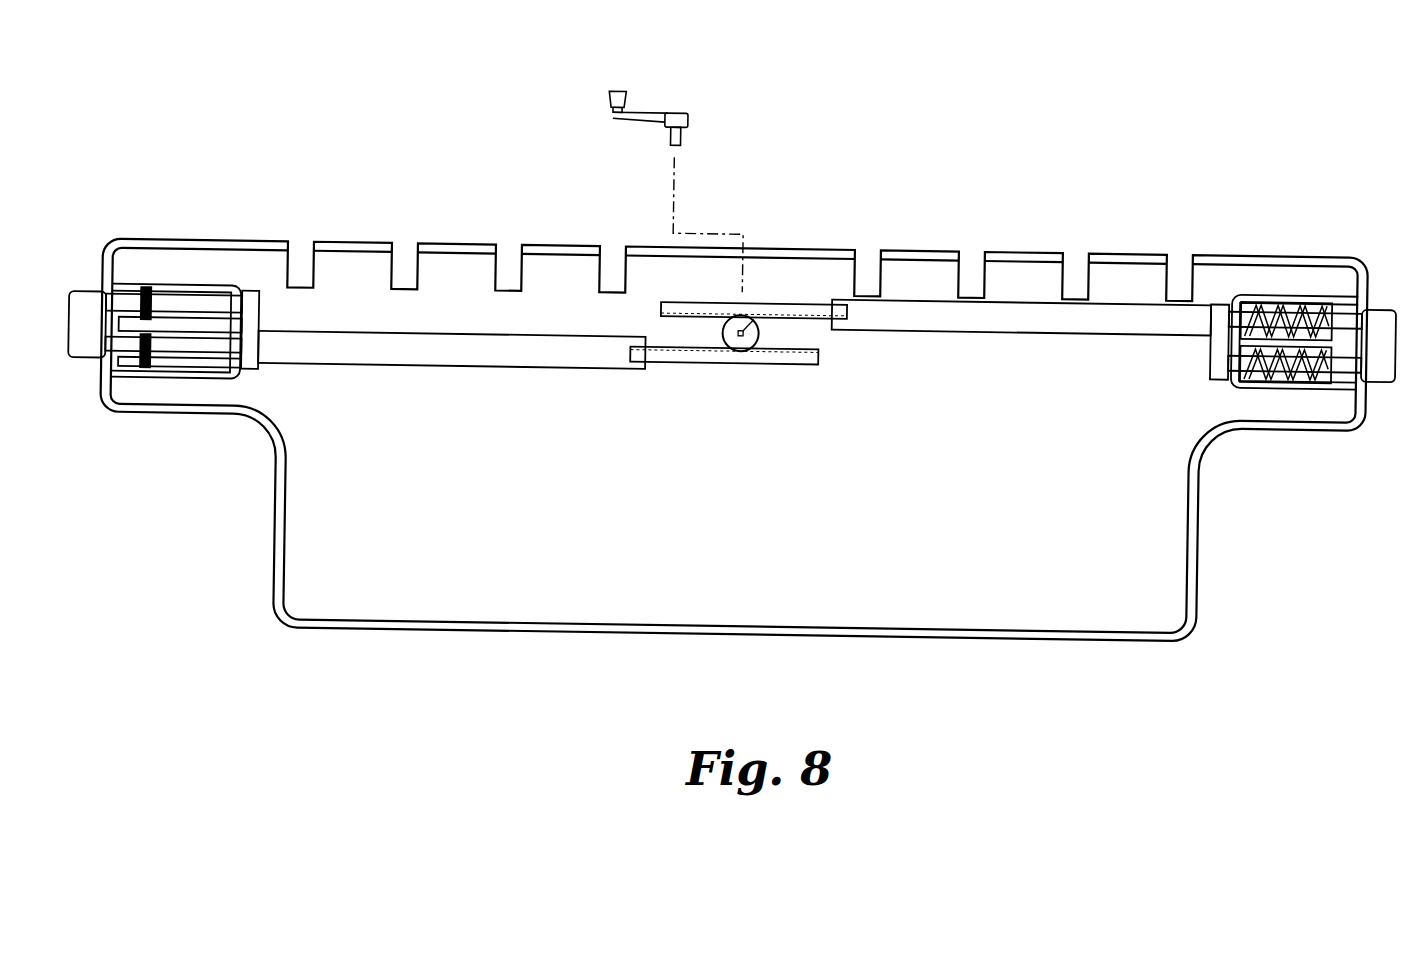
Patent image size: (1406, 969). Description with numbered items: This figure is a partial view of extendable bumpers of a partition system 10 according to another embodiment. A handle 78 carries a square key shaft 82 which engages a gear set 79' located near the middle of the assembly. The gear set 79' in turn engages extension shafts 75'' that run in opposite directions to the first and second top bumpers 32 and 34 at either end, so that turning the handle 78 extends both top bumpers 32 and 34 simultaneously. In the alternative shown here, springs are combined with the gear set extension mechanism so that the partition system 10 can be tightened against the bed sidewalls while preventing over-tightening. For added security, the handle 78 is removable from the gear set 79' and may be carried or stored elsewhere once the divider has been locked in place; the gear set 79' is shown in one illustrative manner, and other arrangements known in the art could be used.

The trim adjustment assembly 10 is at (948, 183).
The top bumper 32 is at (167, 292).
The top bumper 34 is at (1280, 305).
The extension shafts 75'' is at (734, 284).
The gear set 79' is at (773, 278).
The handle 78 is at (648, 112).
The square key shaft 82 is at (679, 145).